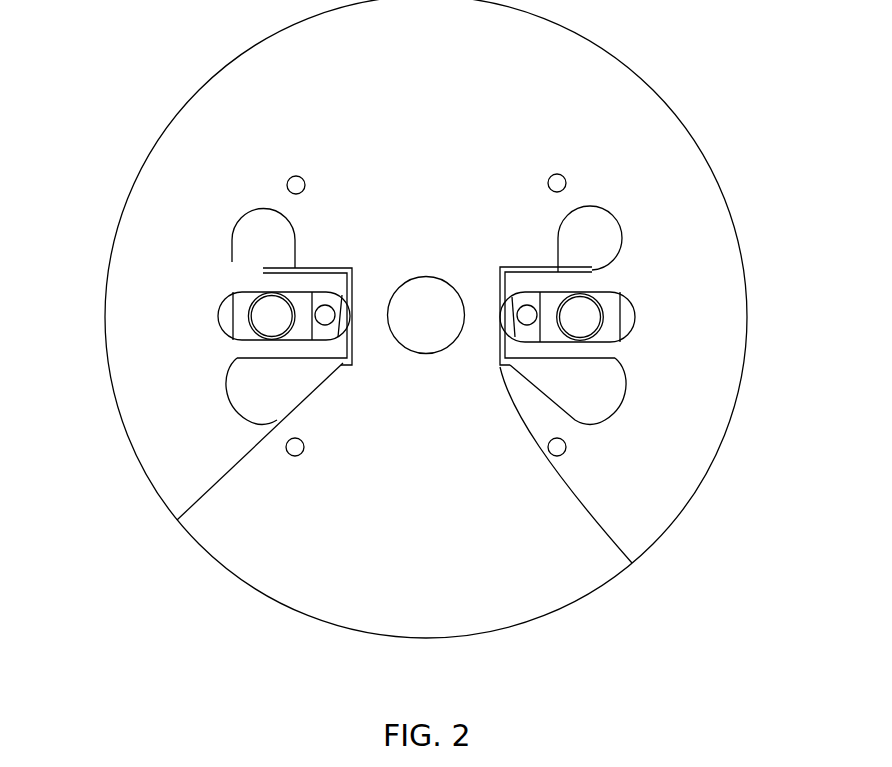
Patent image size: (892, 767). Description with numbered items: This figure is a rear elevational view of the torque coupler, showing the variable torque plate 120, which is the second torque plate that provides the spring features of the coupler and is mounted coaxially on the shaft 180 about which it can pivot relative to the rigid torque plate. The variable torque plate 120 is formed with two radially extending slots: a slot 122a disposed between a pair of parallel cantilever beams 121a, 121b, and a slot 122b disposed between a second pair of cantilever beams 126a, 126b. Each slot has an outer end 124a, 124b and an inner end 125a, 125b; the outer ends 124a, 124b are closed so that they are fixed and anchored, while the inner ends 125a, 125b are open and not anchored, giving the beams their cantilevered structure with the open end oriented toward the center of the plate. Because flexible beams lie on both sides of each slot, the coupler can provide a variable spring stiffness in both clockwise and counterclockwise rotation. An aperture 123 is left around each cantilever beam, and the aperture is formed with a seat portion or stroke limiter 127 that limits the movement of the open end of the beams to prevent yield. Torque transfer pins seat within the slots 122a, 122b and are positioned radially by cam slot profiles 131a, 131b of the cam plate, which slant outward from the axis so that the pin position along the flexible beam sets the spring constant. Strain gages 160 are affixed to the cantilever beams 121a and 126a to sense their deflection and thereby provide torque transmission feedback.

The variable torque plate 120 is at (230, 552).
The cantilever beam 121a is at (278, 282).
The cantilever beam 121b is at (285, 352).
The slot 122a is at (230, 303).
The slot 122b is at (627, 315).
The aperture 123 is at (592, 228).
The outer end 124a is at (218, 318).
The outer end 124b is at (635, 300).
The inner end 125a is at (177, 520).
The inner end 125b is at (632, 563).
The cantilever beam 126a is at (595, 277).
The cantilever beam 126b is at (600, 353).
The stroke limiter 127 is at (517, 267).
The cam slot profile 131a is at (327, 297).
The cam slot profile 131b is at (527, 335).
The strain gage 160 is at (267, 205).
The shaft 180 is at (428, 333).